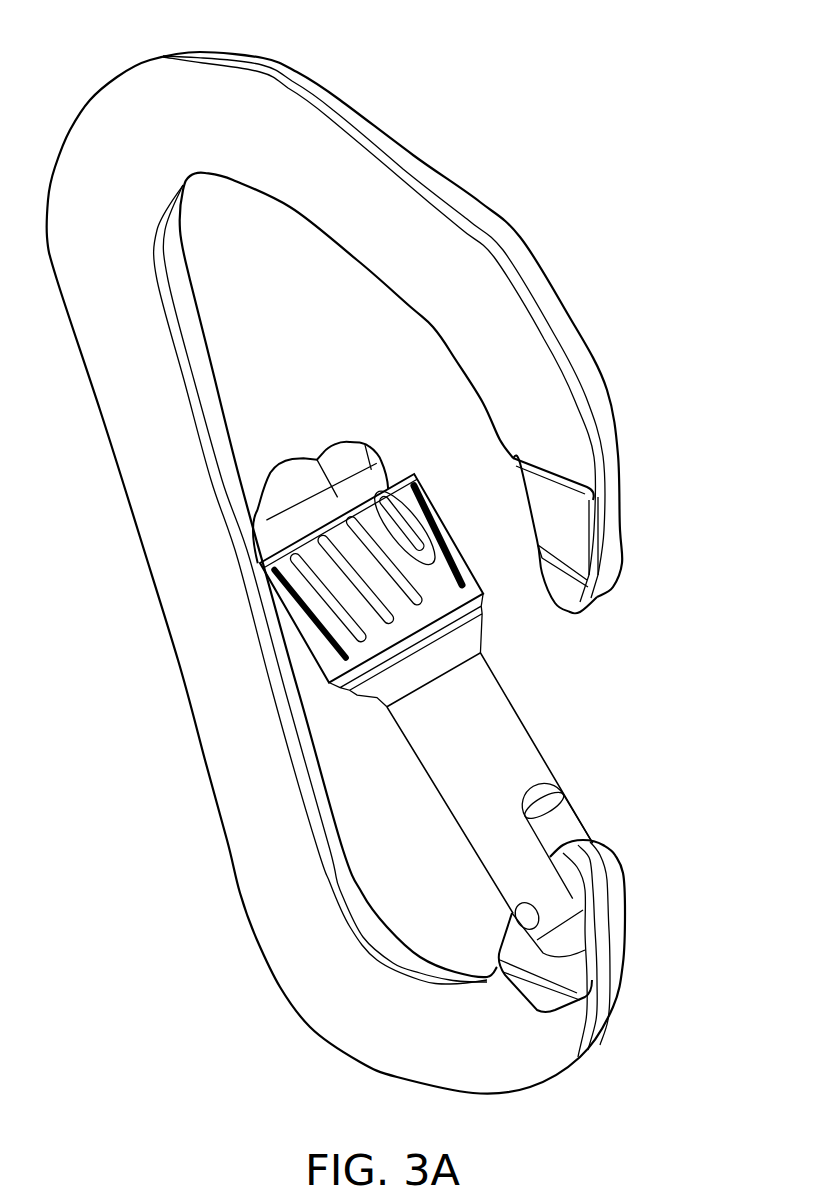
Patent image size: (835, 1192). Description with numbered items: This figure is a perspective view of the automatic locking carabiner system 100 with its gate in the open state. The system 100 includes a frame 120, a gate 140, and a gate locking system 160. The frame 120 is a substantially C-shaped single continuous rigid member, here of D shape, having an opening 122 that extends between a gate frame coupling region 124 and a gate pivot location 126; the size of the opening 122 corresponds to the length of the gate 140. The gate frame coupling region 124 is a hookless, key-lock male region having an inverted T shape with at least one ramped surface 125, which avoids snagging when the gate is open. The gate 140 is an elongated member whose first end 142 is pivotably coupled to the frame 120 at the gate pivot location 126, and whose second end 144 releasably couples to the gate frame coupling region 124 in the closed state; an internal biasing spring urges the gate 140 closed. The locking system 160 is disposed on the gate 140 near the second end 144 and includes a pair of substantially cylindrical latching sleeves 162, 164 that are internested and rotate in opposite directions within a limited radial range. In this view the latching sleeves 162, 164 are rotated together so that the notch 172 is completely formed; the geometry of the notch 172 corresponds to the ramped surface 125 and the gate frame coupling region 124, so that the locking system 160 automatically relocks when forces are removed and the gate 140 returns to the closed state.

The automatic locking carabiner system 100 is at (66, 66).
The frame 120 is at (522, 232).
The opening 122 is at (633, 603).
The gate frame coupling region 124 is at (607, 530).
The ramped surface 125 is at (565, 585).
The gate pivot location 126 is at (570, 950).
The gate 140 is at (465, 793).
The first end of the gate 142 is at (553, 900).
The second end of the gate 144 is at (282, 480).
The gate locking system 160 is at (330, 620).
The latching sleeve 162 is at (443, 527).
The latching sleeve 164 is at (370, 575).
The notch 172 is at (430, 550).